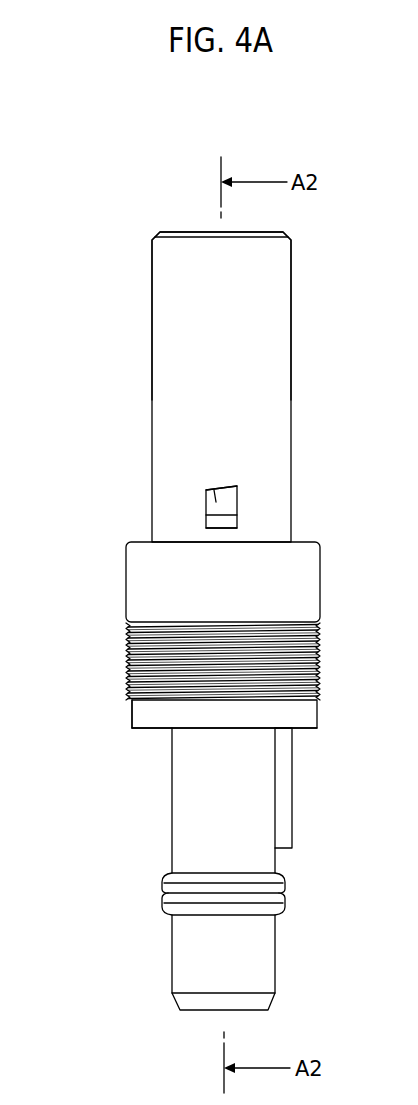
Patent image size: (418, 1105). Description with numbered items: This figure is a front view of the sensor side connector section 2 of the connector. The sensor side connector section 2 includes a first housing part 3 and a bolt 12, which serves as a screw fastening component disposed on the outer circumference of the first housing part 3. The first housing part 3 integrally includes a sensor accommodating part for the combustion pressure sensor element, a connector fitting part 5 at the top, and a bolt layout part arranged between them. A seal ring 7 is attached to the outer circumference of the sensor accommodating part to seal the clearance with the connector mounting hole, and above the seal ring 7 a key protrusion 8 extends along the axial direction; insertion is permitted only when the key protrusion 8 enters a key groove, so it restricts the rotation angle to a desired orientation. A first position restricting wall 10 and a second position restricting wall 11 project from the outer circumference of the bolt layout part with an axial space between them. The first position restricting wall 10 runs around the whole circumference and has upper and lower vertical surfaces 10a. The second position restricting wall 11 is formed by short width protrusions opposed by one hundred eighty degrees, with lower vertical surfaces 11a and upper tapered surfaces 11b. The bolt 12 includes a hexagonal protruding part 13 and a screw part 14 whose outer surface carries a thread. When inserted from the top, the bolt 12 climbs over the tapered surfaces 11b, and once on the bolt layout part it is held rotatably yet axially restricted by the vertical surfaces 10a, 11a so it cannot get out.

The sensor side connector section 2 is at (218, 387).
The first housing part 3 is at (297, 500).
The connector fitting part 5 is at (272, 310).
The seal ring 7 is at (285, 875).
The key protrusion 8 is at (287, 762).
The first position restricting wall 10 is at (169, 722).
The vertical surfaces 10a is at (138, 694).
The second position restricting wall 11 is at (162, 482).
The vertical surfaces 11a is at (213, 528).
The tapered surfaces 11b is at (215, 498).
The bolt 12 is at (208, 653).
The hexagonal protruding part 13 is at (300, 580).
The screw part 14 is at (322, 655).